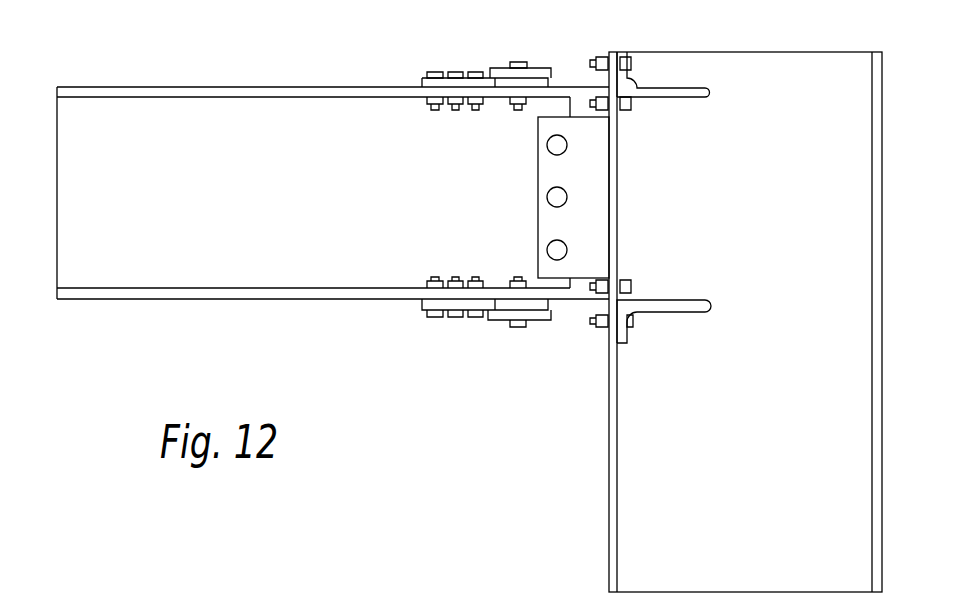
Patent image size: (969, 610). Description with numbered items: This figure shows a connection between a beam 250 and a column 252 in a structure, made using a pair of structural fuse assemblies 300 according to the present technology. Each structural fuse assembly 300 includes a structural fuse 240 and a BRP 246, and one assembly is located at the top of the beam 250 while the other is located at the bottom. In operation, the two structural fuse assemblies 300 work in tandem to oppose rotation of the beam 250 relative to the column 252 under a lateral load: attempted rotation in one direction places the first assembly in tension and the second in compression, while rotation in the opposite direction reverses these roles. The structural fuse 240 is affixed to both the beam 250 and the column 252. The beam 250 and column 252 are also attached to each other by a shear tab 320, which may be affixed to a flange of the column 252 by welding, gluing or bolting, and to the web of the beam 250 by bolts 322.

The structural fuse 240 is at (423, 78).
The BRP 246 is at (548, 68).
The beam 250 is at (135, 265).
The column 252 is at (836, 162).
The structural fuse assembly 300 is at (483, 43).
The shear tab 320 is at (538, 163).
The bolts 322 is at (549, 243).